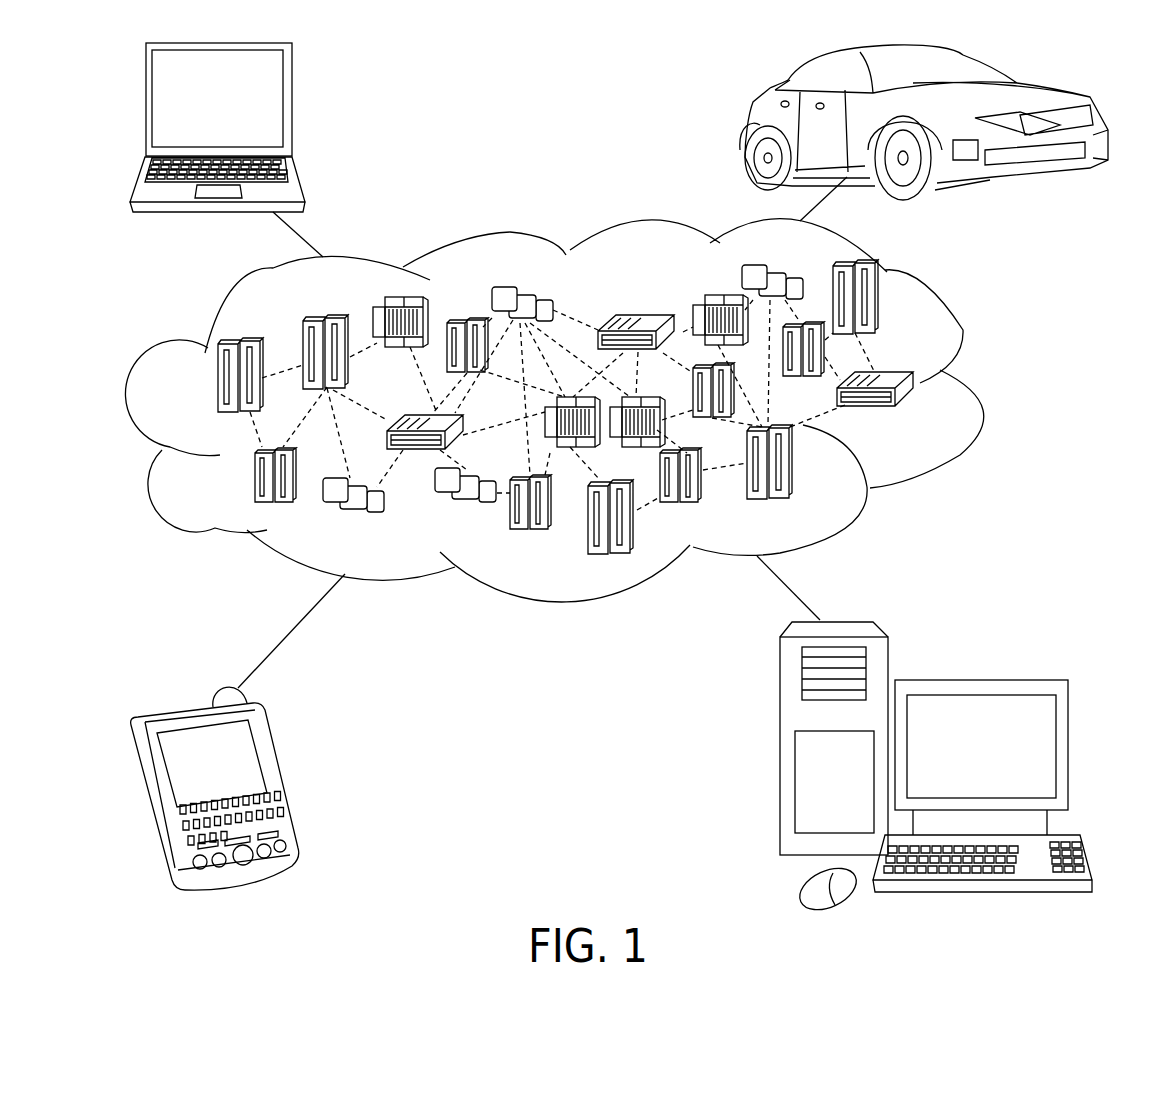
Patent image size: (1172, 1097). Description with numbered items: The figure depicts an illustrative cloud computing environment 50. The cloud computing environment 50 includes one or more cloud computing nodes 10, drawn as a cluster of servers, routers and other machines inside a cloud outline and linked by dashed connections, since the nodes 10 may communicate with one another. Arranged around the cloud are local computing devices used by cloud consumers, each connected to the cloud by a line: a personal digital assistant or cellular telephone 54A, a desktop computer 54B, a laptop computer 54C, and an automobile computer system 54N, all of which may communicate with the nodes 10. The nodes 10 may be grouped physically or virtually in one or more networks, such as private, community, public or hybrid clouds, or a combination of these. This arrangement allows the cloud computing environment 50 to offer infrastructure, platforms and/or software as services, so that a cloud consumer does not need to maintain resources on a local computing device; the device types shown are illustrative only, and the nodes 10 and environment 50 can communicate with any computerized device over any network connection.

The cloud computing node 10 is at (917, 417).
The cloud computing environment 50 is at (977, 383).
The personal digital assistant (PDA) or cellular telephone 54A is at (280, 777).
The desktop computer 54B is at (978, 680).
The laptop computer 54C is at (290, 105).
The automobile computer system 54N is at (748, 121).